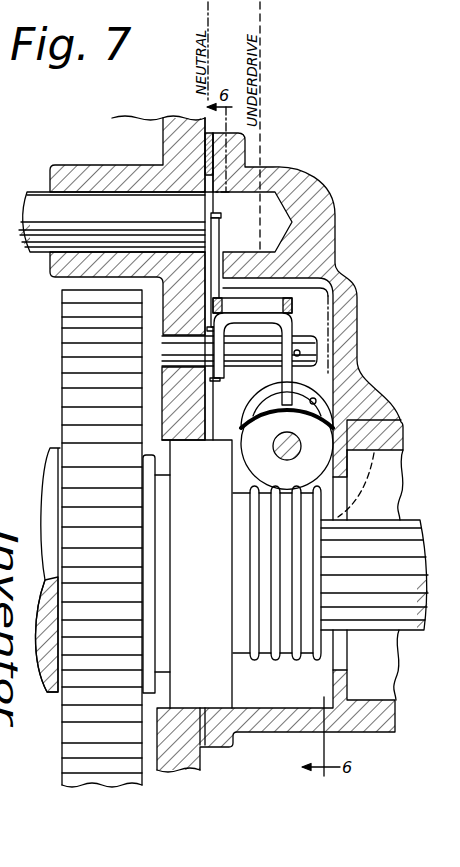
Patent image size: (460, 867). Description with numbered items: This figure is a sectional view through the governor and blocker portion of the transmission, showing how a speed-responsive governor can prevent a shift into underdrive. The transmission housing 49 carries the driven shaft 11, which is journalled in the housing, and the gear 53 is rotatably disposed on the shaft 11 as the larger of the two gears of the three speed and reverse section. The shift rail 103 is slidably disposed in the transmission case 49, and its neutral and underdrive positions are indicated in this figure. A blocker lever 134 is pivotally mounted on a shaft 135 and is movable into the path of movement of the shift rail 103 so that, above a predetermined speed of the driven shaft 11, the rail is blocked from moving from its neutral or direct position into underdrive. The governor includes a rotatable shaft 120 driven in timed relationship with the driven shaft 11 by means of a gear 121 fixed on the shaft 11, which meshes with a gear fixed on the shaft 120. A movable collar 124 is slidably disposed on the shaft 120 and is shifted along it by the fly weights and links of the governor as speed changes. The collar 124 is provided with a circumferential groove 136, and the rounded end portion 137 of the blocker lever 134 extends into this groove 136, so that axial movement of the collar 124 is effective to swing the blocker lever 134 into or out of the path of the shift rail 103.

The transmission housing 49 is at (173, 148).
The shift rail 103 is at (38, 195).
The gear 53 is at (73, 336).
The blocker lever 134 is at (254, 213).
The shaft 135 is at (316, 343).
The circumferential groove 136 is at (317, 403).
The rounded end portion 137 is at (280, 397).
The movable collar 124 is at (256, 425).
The rotatable shaft 120 is at (297, 450).
The driven shaft 11 is at (410, 523).
The gear 121 is at (282, 661).